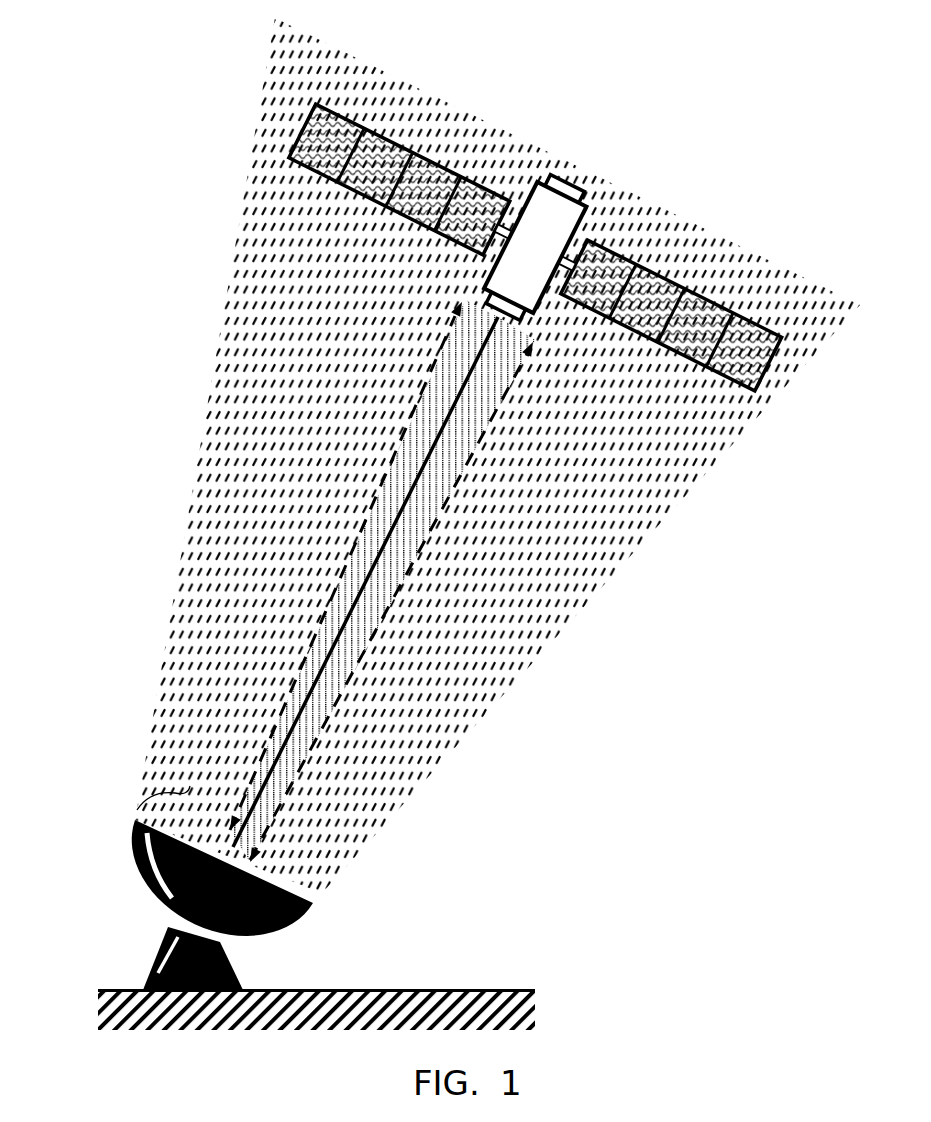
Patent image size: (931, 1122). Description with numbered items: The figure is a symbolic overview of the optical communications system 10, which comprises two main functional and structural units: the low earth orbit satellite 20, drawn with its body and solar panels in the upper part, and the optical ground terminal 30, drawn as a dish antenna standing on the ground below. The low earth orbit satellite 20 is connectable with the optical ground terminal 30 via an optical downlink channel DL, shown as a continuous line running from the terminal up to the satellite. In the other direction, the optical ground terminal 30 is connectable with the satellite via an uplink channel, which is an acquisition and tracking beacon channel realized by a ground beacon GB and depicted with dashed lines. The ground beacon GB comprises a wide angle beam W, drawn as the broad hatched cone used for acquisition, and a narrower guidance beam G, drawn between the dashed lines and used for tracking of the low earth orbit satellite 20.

The optical communications system 10 is at (779, 29).
The low earth orbit satellite 20 is at (545, 172).
The optical ground terminal 30 is at (168, 903).
The optical downlink channel DL is at (285, 742).
The wide angle beam W is at (478, 695).
The guidance beam G is at (190, 786).
The ground beacon GB is at (167, 777).